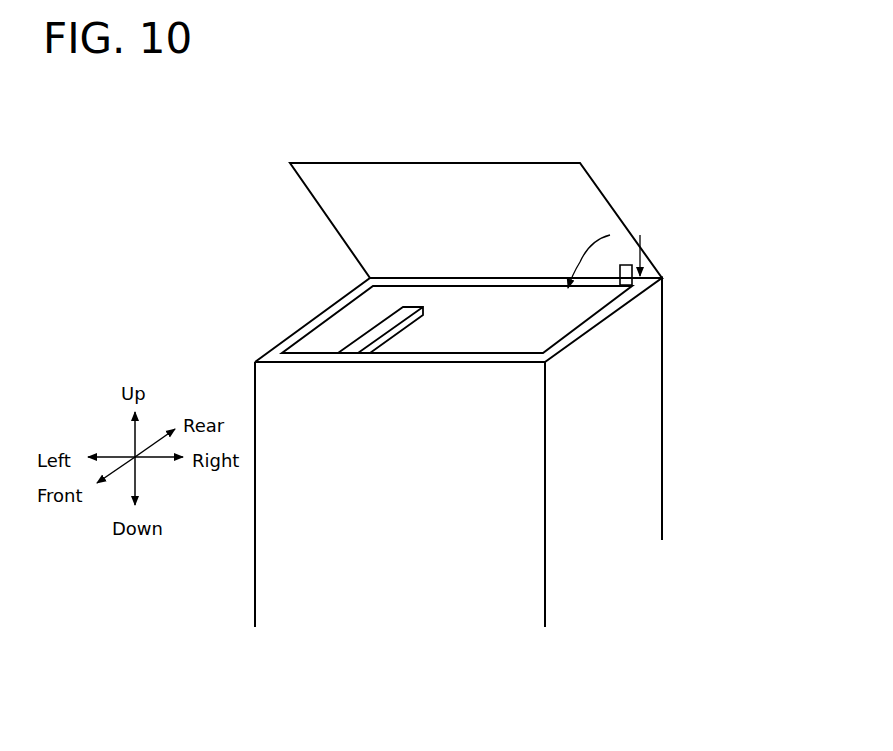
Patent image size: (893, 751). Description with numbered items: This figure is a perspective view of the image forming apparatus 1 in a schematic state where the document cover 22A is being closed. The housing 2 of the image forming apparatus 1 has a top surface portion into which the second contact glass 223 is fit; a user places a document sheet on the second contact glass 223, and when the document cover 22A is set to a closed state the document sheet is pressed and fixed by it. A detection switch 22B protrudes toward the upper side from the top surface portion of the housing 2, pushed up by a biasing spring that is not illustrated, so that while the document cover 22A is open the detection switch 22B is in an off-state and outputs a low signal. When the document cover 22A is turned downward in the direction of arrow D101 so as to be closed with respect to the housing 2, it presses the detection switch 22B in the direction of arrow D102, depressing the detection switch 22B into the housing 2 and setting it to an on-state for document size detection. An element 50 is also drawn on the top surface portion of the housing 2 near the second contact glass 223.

The image forming apparatus 1 is at (235, 183).
The housing 2 is at (640, 458).
The document cover 22A is at (595, 182).
The detection switch 22B is at (655, 283).
The second contact glass 223 is at (333, 332).
The sheet 50 is at (390, 318).
The arrow D101 is at (590, 236).
The arrow D102 is at (641, 245).